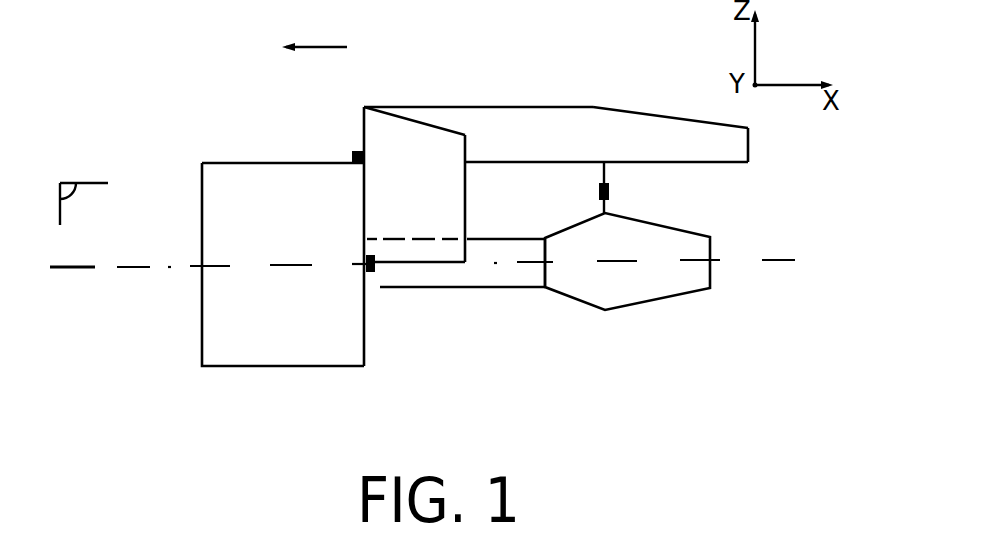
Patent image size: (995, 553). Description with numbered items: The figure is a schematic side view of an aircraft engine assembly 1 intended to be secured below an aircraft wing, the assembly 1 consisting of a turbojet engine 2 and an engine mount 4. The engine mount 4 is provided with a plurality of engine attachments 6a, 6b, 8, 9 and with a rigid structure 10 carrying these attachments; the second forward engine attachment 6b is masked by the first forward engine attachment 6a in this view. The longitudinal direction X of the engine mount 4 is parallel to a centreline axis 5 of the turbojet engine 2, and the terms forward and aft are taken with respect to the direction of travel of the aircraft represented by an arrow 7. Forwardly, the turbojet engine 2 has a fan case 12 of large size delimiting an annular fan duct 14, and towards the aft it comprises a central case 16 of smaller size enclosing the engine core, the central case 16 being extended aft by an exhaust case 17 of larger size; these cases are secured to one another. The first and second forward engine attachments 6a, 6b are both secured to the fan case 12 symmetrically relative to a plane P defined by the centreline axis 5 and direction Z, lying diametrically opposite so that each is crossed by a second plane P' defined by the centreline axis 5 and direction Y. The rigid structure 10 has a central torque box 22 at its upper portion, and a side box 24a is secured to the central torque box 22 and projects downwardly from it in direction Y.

The aircraft engine assembly 1 is at (141, 154).
The turbojet engine 2 is at (283, 288).
The engine mount 4 is at (556, 116).
The centreline axis 5 is at (151, 269).
The first forward engine attachment 6a is at (416, 295).
The second forward engine attachment 6b is at (370, 274).
The arrow 7 is at (313, 46).
The engine attachment 8 is at (353, 156).
The engine attachment 9 is at (610, 190).
The rigid structure 10 is at (499, 103).
The fan case 12 is at (234, 177).
The annular fan duct 14 is at (325, 346).
The central case 16 is at (518, 282).
The exhaust case 17 is at (647, 302).
The central torque box 22 is at (416, 119).
The side box 24a is at (461, 152).
The plane P is at (84, 180).
The second plane P' is at (72, 301).